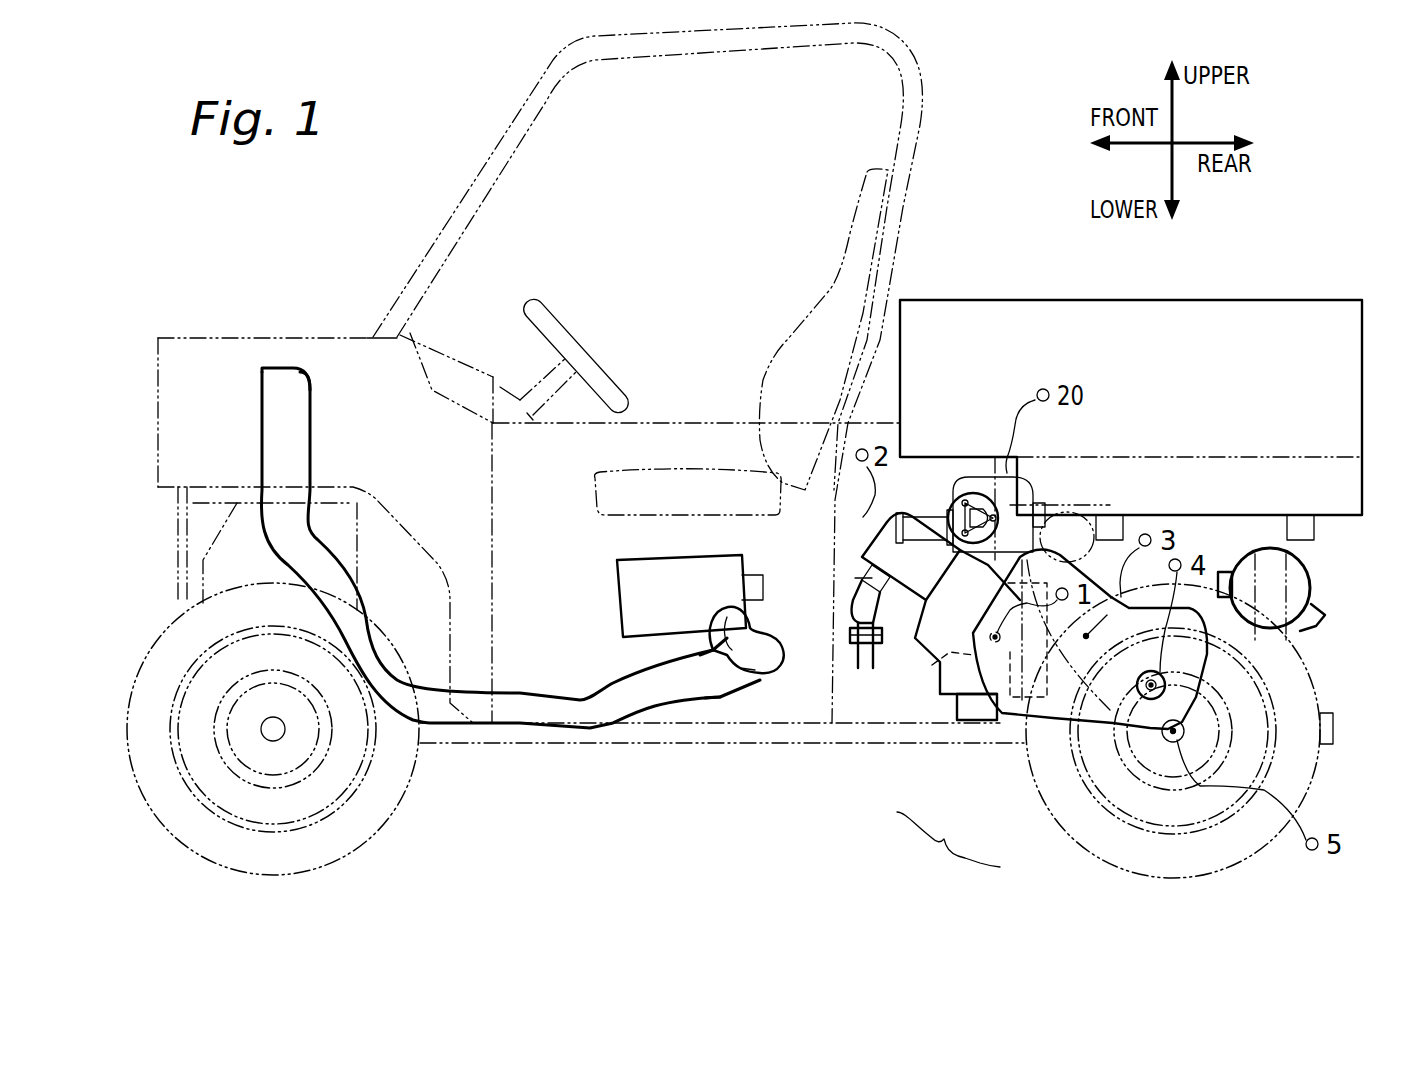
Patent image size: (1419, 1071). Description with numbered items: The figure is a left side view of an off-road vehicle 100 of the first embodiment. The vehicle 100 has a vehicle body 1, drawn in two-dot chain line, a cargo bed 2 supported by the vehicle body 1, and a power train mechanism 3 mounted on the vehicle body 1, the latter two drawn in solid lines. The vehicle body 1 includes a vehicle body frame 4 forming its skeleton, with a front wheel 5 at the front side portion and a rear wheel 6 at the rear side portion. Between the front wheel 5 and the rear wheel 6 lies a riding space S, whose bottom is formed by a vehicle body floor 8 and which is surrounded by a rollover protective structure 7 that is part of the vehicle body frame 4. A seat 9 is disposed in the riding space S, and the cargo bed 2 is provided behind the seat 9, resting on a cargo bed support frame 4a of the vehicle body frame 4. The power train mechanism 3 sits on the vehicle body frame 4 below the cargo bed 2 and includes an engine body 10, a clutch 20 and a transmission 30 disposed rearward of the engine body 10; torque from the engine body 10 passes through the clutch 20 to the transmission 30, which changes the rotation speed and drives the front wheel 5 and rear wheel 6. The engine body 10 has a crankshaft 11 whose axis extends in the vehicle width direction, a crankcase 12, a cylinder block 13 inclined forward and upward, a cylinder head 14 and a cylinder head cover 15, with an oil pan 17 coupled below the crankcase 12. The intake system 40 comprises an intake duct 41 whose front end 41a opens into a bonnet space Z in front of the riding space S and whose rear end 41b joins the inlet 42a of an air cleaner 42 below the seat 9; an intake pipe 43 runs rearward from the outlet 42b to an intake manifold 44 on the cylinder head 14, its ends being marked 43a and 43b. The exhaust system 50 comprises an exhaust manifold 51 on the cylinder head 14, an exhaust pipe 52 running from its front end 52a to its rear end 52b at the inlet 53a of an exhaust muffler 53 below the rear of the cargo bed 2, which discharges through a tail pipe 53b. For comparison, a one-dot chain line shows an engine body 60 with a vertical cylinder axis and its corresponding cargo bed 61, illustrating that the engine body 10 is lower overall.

The vehicle body 1 is at (227, 337).
The cargo bed 2 is at (1267, 300).
The power train mechanism 3 is at (948, 850).
The vehicle body frame 4 is at (810, 738).
The cargo bed support frame 4a is at (1304, 517).
The front wheel 5 is at (413, 790).
The rear wheel 6 is at (1100, 853).
The rollover protective structure 7 is at (517, 127).
The vehicle body floor 8 is at (727, 713).
The seat 9 is at (657, 477).
The engine body 10 is at (1021, 682).
The crankshaft 11 is at (932, 665).
The crankcase 12 is at (966, 646).
The cylinder block 13 is at (911, 643).
The cylinder head 14 is at (917, 584).
The cylinder head cover 15 is at (955, 597).
The oil pan 17 is at (970, 713).
The clutch 20 is at (1023, 717).
The transmission 30 is at (1087, 727).
The intake system 40 is at (605, 579).
The intake duct 41 is at (311, 442).
The front end 41a is at (260, 390).
The rear end 41b is at (713, 663).
The air cleaner 42 is at (710, 611).
The inlet 42a is at (685, 744).
The outlet 42b is at (757, 608).
The intake pipe 43 is at (765, 587).
The connecting duct inlet 43a is at (747, 653).
The connecting duct outlet 43b is at (980, 503).
The intake manifold 44 is at (940, 507).
The exhaust system 50 is at (1086, 647).
The exhaust manifold 51 is at (853, 577).
The exhaust pipe 52 is at (853, 653).
The front end 52a is at (853, 653).
The rear end 52b is at (1232, 551).
The exhaust muffler 53 is at (1309, 567).
The inlet 53a is at (1236, 580).
The tail pipe 53b is at (1321, 622).
The engine body 60 is at (1020, 480).
The cargo bed 61 is at (1307, 458).
The vehicle 100 is at (397, 277).
The bonnet space Z is at (353, 380).
The riding space S is at (697, 240).